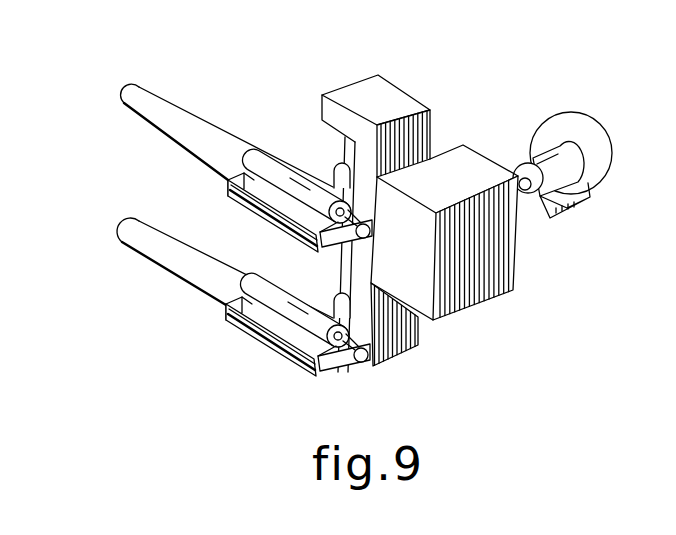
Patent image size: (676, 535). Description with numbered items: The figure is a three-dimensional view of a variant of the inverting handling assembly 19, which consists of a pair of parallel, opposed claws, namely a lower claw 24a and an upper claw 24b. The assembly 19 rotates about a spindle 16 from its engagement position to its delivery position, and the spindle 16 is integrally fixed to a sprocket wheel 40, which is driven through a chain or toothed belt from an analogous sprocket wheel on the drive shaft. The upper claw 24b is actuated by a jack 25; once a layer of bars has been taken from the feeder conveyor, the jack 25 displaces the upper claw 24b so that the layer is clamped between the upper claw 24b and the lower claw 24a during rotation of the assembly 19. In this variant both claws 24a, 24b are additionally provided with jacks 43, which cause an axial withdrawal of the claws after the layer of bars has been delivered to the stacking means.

The inverting handling assembly 19 is at (449, 131).
The jack 25 is at (336, 172).
The lower claw 24a is at (190, 128).
The upper claw 24b is at (180, 251).
The jacks 43 is at (257, 163).
The sprocket wheel 40 is at (590, 152).
The spindle 16 is at (513, 197).